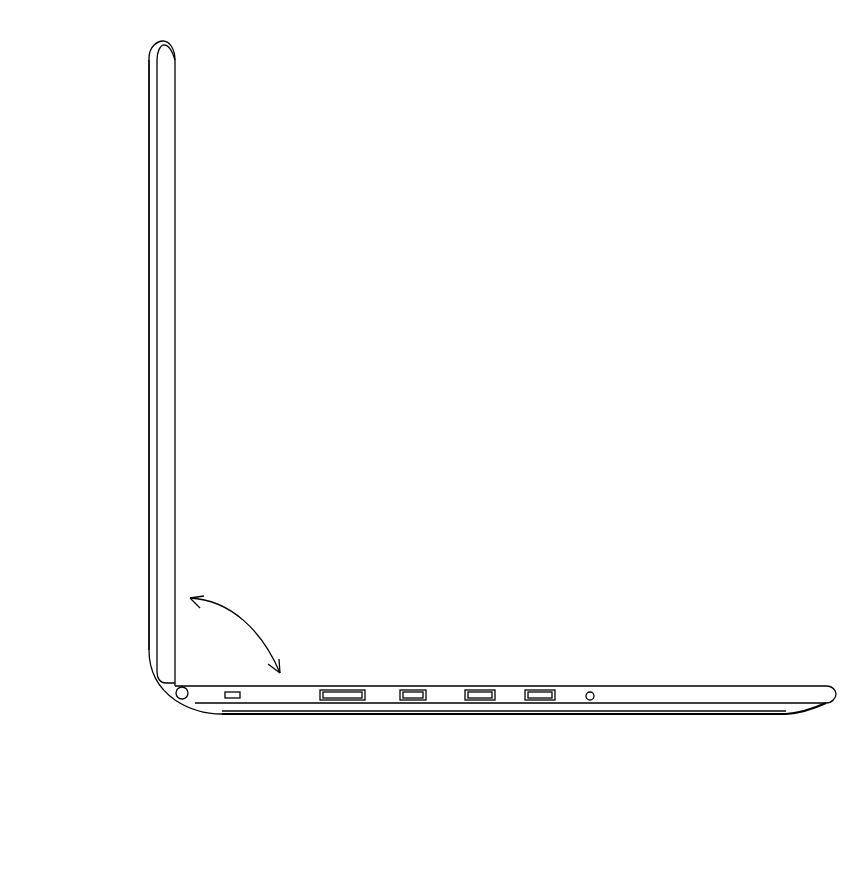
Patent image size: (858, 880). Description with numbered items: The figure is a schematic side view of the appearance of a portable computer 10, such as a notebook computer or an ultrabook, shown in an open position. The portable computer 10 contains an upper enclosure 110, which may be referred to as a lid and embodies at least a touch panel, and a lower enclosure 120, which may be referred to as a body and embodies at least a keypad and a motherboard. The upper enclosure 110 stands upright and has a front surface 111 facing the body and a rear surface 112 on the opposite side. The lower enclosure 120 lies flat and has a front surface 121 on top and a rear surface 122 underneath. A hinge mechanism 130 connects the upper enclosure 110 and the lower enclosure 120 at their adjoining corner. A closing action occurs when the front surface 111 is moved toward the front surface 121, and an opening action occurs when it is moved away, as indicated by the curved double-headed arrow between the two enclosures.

The portable computer 10 is at (556, 96).
The upper enclosure 110 is at (166, 62).
The front surface 111 is at (178, 358).
The rear surface 112 is at (147, 358).
The lower enclosure 120 is at (620, 694).
The front surface 121 is at (675, 686).
The rear surface 122 is at (678, 714).
The hinge mechanism 130 is at (176, 700).